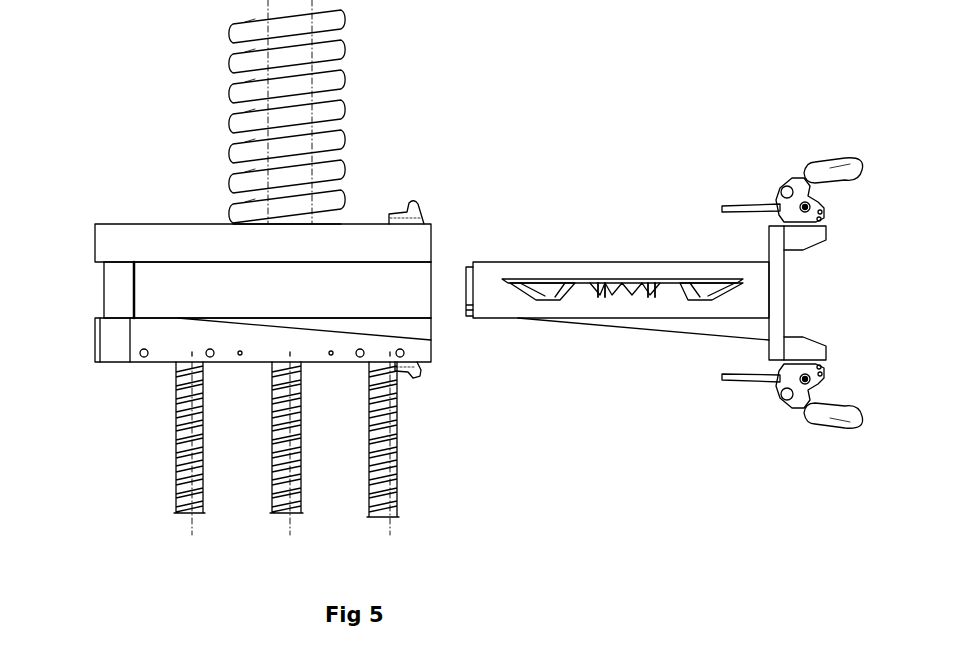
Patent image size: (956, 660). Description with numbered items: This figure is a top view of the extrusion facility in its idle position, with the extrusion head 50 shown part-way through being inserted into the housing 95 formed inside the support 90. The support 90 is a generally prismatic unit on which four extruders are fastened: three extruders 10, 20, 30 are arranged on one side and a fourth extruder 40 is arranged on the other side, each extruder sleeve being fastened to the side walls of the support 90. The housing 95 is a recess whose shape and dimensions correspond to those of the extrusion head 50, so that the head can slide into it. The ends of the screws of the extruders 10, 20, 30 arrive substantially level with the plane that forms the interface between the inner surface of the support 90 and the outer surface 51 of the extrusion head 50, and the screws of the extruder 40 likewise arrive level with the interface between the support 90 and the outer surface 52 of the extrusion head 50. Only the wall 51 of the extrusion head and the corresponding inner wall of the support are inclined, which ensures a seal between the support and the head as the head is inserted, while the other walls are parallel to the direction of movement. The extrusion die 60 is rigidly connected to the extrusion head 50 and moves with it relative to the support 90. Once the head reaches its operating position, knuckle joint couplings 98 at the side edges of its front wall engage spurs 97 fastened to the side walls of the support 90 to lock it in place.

The support 90 is at (112, 210).
The extruder 40 is at (349, 103).
The housing 95 is at (328, 279).
The spur 97 is at (424, 217).
The extruder 30 is at (194, 518).
The extruder 20 is at (291, 516).
The extruder 10 is at (393, 521).
The extrusion head 50 is at (636, 225).
The outer surface of the extrusion head 52 is at (570, 261).
The extrusion die 60 is at (710, 280).
The outer surface of the extrusion head 51 is at (676, 332).
The knuckle joint coupling 98 is at (797, 172).